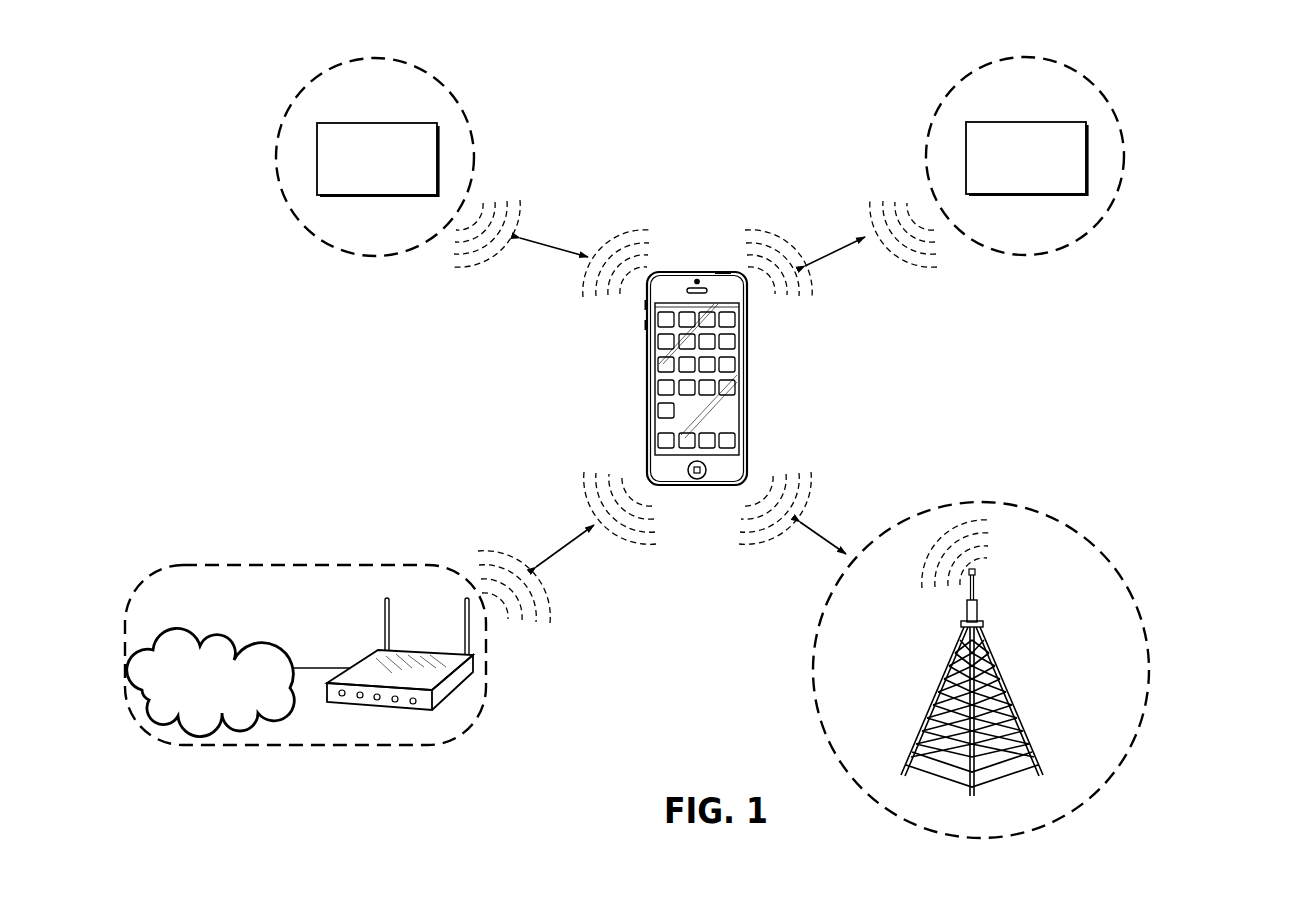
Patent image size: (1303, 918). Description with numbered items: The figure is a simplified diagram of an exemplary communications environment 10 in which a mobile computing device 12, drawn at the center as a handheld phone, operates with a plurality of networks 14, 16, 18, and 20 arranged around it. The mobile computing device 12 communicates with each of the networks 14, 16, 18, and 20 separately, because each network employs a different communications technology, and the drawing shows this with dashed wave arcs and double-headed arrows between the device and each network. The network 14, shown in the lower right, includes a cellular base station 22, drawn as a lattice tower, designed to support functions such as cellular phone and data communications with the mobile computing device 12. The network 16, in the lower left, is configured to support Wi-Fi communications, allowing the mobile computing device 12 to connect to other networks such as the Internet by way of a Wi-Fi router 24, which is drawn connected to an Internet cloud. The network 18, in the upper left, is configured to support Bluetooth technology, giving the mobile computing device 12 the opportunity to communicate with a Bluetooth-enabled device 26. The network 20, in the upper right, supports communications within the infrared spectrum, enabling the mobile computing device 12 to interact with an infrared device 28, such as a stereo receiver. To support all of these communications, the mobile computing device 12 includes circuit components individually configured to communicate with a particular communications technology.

The communications environment 10 is at (1204, 84).
The mobile computing device 12 is at (747, 378).
The network 14 is at (1098, 541).
The network 16 is at (488, 666).
The network 18 is at (457, 97).
The network 20 is at (1120, 186).
The cellular base station 22 is at (985, 626).
The Wi-Fi router 24 is at (447, 686).
The Bluetooth-enabled device 26 is at (437, 150).
The infrared device 28 is at (1086, 137).